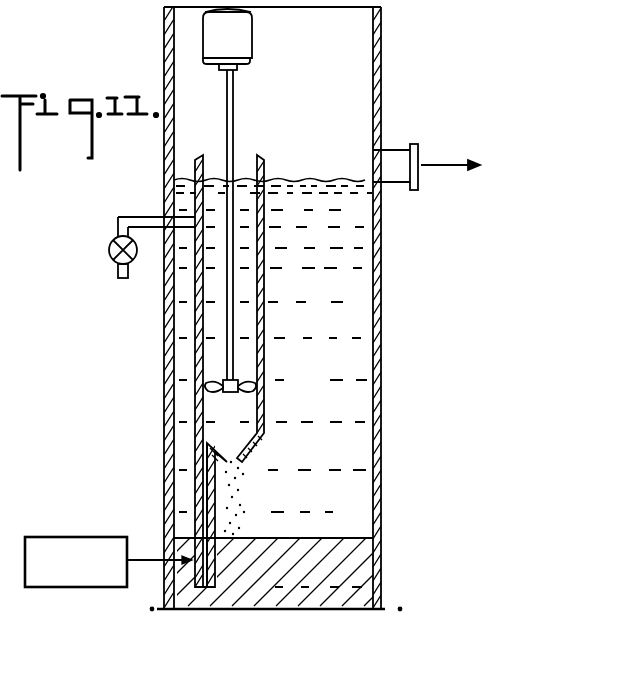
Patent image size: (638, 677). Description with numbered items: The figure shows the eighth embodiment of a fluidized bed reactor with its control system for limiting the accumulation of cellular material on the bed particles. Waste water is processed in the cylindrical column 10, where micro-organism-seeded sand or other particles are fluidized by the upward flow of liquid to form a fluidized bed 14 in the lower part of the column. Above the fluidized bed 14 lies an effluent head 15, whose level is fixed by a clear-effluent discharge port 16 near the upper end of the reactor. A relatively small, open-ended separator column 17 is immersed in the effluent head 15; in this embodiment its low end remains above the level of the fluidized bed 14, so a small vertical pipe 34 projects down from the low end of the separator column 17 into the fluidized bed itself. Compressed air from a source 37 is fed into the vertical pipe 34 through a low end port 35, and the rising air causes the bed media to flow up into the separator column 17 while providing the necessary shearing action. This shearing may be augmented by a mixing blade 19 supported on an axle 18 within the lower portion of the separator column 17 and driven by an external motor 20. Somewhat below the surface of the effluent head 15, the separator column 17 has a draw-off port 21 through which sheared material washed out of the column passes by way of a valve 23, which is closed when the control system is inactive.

The cylindrical column 10 is at (381, 82).
The fluidized bed 14 is at (337, 541).
The effluent head 15 is at (363, 410).
The clear-effluent discharge port 16 is at (398, 156).
The separator column 17 is at (264, 160).
The axle 18 is at (234, 108).
The mixing blade 19 is at (245, 386).
The motor 20 is at (243, 43).
The draw-off port 21 is at (134, 221).
The valve 23 is at (112, 258).
The vertical pipe 34 is at (200, 480).
The low end port 35 is at (178, 550).
The compressed air source 37 is at (75, 535).